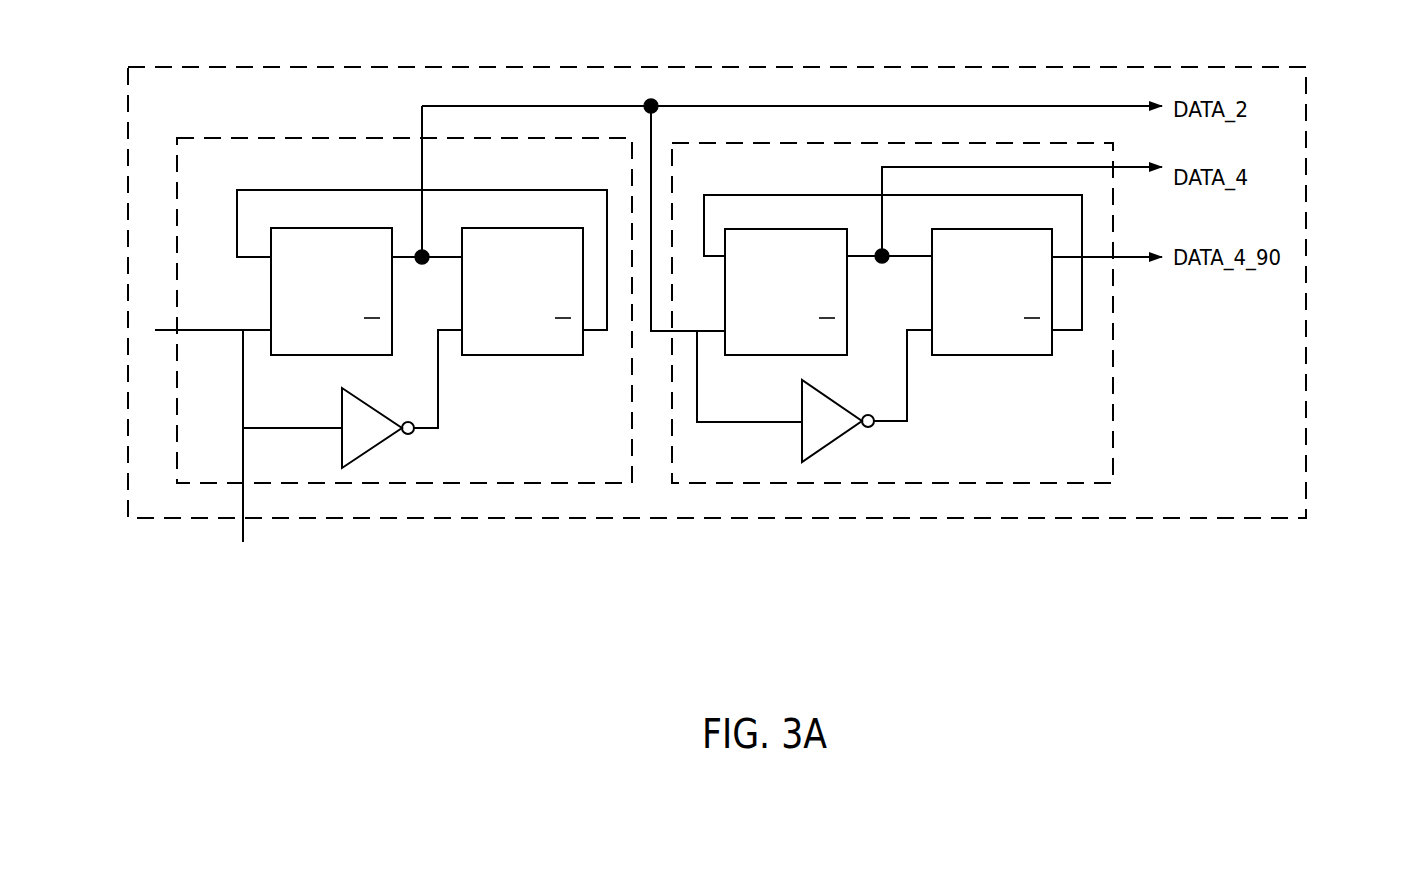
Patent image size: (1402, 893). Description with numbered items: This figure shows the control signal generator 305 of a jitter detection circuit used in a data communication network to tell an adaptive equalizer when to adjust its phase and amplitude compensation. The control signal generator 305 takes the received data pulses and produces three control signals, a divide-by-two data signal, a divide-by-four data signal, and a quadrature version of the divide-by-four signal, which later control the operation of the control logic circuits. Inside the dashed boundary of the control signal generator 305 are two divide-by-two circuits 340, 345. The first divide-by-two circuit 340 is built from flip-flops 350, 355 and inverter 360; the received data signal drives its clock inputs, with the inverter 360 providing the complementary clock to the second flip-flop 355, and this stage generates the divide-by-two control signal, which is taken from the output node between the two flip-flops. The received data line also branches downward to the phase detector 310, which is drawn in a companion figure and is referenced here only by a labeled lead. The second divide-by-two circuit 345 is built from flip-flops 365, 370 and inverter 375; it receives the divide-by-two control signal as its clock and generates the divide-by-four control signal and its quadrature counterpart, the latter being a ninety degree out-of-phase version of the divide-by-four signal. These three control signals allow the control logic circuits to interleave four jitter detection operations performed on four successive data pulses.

The control signal generator 305 is at (1310, 350).
The divide-by-two circuit 340 is at (315, 136).
The divide-by-two circuit 345 is at (1117, 395).
The flip-flop 350 is at (322, 356).
The flip-flop 355 is at (515, 356).
The inverter 360 is at (377, 408).
The flip-flop 365 is at (772, 356).
The flip-flop 370 is at (988, 357).
The inverter 375 is at (848, 410).
The phase detector 310 is at (226, 466).